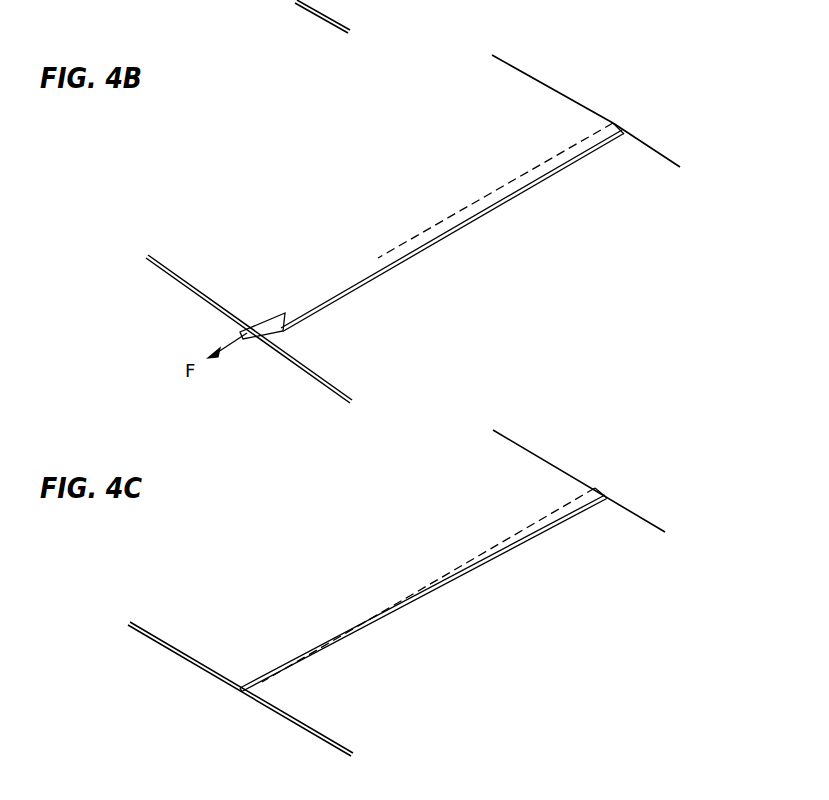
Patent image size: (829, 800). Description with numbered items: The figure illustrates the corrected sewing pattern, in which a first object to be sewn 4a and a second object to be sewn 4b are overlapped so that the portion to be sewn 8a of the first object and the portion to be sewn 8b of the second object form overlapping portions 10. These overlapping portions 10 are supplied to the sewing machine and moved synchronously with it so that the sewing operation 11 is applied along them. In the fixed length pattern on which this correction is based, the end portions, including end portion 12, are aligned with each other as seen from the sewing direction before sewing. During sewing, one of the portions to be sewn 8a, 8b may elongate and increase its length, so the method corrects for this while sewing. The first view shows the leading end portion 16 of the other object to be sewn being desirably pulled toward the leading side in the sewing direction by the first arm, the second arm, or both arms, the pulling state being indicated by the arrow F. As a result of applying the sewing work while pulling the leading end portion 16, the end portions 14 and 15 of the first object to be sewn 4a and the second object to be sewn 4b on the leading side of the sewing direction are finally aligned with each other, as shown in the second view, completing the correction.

In FIG. 4B, the first object to be sewn 4a is at (510, 103).
In FIG. 4C, the first object to be sewn 4a is at (532, 490).
In FIG. 4B, the second object to be sewn 4b is at (650, 173).
In FIG. 4C, the second object to be sewn 4b is at (330, 707).
In FIG. 4B, the portion to be sewn 8a is at (578, 128).
In FIG. 4C, the portion to be sewn 8a is at (262, 682).
In FIG. 4B, the portion to be sewn 8b is at (262, 338).
In FIG. 4B, the overlapping portions 10 is at (472, 192).
In FIG. 4B, the sewing operation 11 is at (432, 227).
In FIG. 4C, the sewing operation 11 is at (345, 630).
In FIG. 4B, the end portion 12 is at (620, 130).
In FIG. 4C, the end portion 14 is at (253, 703).
In FIG. 4C, the end portion 15 is at (240, 690).
In FIG. 4B, the leading end portion 16 is at (268, 323).